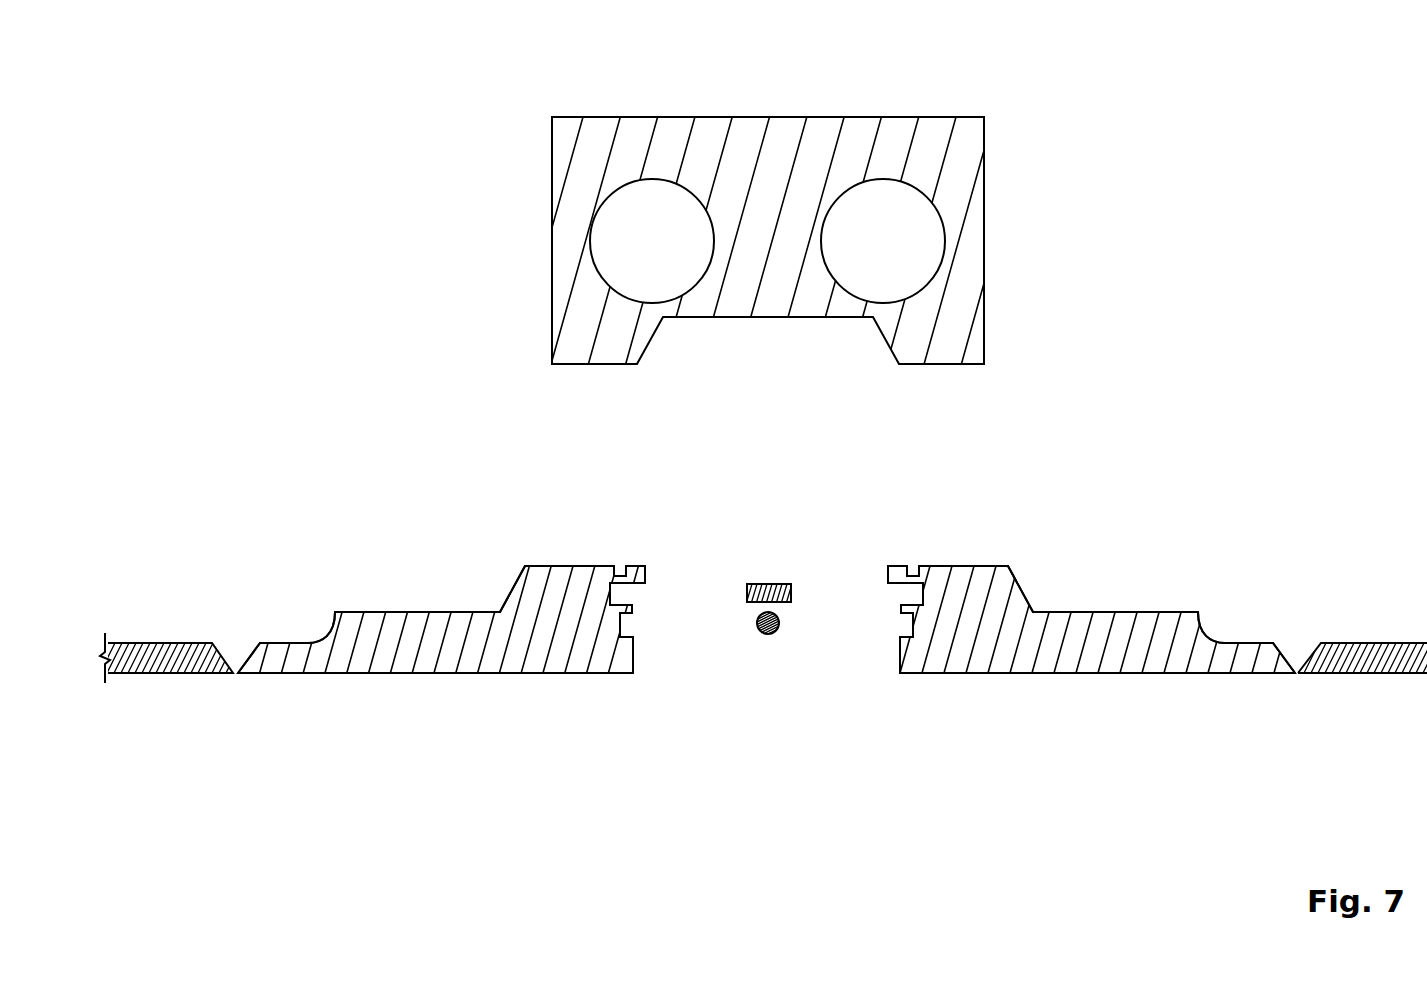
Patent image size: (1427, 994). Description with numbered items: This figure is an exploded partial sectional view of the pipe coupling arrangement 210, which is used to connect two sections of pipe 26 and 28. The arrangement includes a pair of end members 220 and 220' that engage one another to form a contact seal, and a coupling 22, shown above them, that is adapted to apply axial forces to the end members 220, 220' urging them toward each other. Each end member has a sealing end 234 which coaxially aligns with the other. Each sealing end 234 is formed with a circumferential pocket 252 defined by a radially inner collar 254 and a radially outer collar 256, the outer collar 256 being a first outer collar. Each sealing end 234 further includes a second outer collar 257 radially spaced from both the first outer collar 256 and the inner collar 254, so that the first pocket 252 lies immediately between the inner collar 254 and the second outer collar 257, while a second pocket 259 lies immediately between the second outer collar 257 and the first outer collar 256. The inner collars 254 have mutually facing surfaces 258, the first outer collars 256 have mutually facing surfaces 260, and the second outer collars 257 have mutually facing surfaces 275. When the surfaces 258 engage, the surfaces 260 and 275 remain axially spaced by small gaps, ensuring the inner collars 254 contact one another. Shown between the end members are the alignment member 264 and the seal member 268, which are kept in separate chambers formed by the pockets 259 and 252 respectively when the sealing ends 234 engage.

The pipe coupling arrangement 210 is at (1262, 82).
The coupling 22 is at (963, 152).
The section of pipe 26 is at (205, 663).
The section of pipe 28 is at (1350, 663).
The end member 220 is at (286, 685).
The end member 220' is at (1246, 685).
The sealing end 234 is at (472, 663).
The circumferential pocket 252 is at (645, 625).
The radially inner collar 254 is at (624, 608).
The radially outer collar 256 is at (617, 566).
The second outer collar 257 is at (620, 660).
The mutually facing surface 258 is at (633, 655).
The second pocket 259 is at (640, 592).
The mutually facing surface 260 is at (643, 578).
The alignment member 264 is at (768, 584).
The seal member 268 is at (768, 634).
The mutually facing surface 275 is at (638, 593).